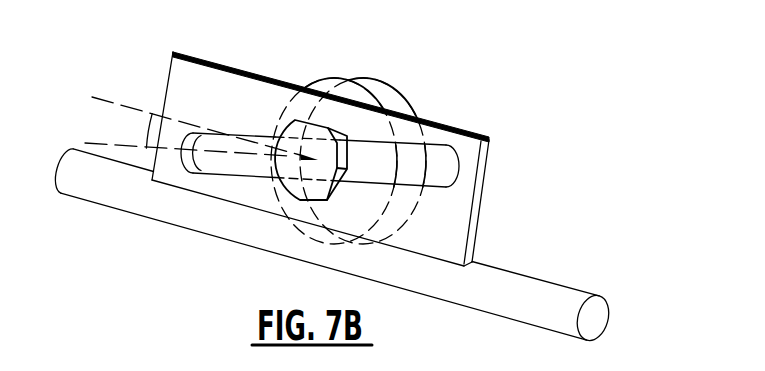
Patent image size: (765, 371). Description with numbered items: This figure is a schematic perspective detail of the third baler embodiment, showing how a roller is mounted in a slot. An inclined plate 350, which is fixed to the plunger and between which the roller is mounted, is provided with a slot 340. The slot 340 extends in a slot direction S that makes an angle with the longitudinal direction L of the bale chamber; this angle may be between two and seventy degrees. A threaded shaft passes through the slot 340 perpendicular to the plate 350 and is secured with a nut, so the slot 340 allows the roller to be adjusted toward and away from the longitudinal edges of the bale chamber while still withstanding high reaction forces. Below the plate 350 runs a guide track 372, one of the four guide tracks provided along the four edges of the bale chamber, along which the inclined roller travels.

The slot 340 is at (437, 168).
The inclined plate 350 is at (470, 168).
The guide track 372 is at (197, 205).
The longitudinal direction L is at (110, 98).
The slot direction S is at (127, 150).